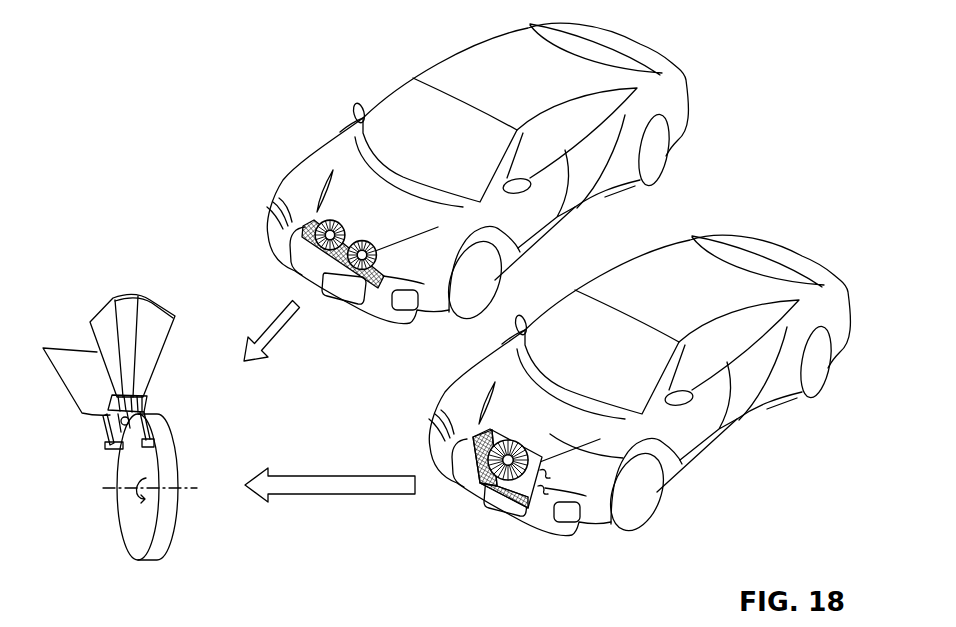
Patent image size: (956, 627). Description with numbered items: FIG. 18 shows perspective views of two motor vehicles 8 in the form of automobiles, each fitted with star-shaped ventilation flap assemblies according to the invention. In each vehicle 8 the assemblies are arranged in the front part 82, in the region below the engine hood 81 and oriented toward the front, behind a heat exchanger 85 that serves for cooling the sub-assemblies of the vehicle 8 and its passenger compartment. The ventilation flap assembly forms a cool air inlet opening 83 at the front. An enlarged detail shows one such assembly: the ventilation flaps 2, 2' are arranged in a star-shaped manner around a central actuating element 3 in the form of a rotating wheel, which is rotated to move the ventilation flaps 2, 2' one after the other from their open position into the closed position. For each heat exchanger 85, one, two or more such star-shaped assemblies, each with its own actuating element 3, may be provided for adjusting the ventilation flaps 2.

The ventilation flap 2 is at (155, 345).
The ventilation flap 2' is at (166, 348).
The actuating element 3 is at (143, 533).
The motor vehicle 8 is at (373, 90).
The engine hood 81 is at (352, 195).
The front part 82 is at (274, 246).
The cool air inlet opening 83 is at (332, 295).
The heat exchanger 85 is at (303, 226).